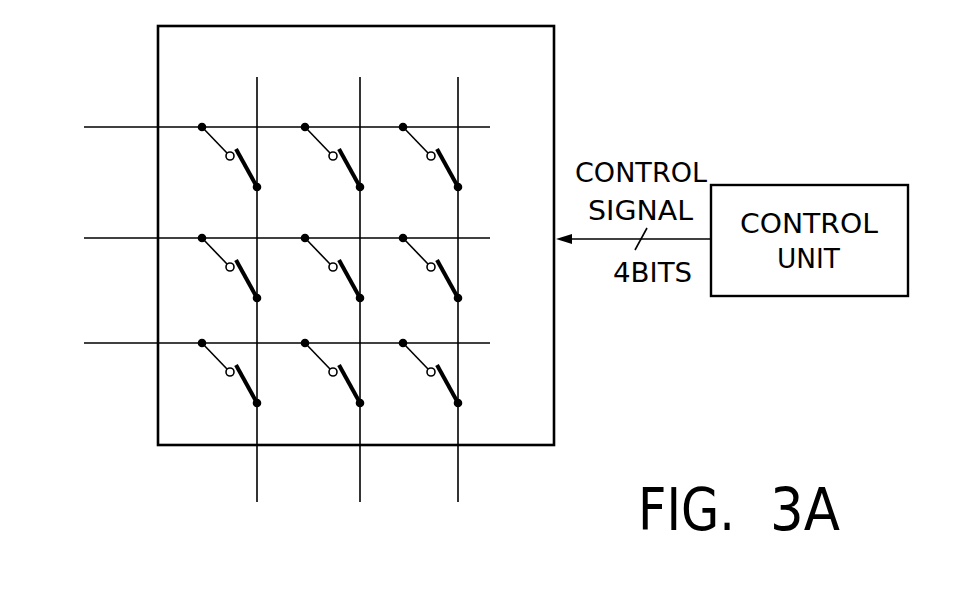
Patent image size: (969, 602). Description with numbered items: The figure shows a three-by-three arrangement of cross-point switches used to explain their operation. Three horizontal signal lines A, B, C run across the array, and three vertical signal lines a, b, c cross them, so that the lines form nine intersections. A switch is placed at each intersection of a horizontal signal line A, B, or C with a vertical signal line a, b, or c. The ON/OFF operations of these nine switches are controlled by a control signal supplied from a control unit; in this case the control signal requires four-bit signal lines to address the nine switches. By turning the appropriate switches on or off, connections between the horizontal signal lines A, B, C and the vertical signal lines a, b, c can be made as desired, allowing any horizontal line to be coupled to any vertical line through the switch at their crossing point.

The horizontal signal line A is at (272, 114).
The horizontal signal line B is at (273, 236).
The horizontal signal line C is at (273, 337).
The vertical signal line a is at (259, 308).
The vertical signal line b is at (366, 308).
The vertical signal line c is at (462, 308).